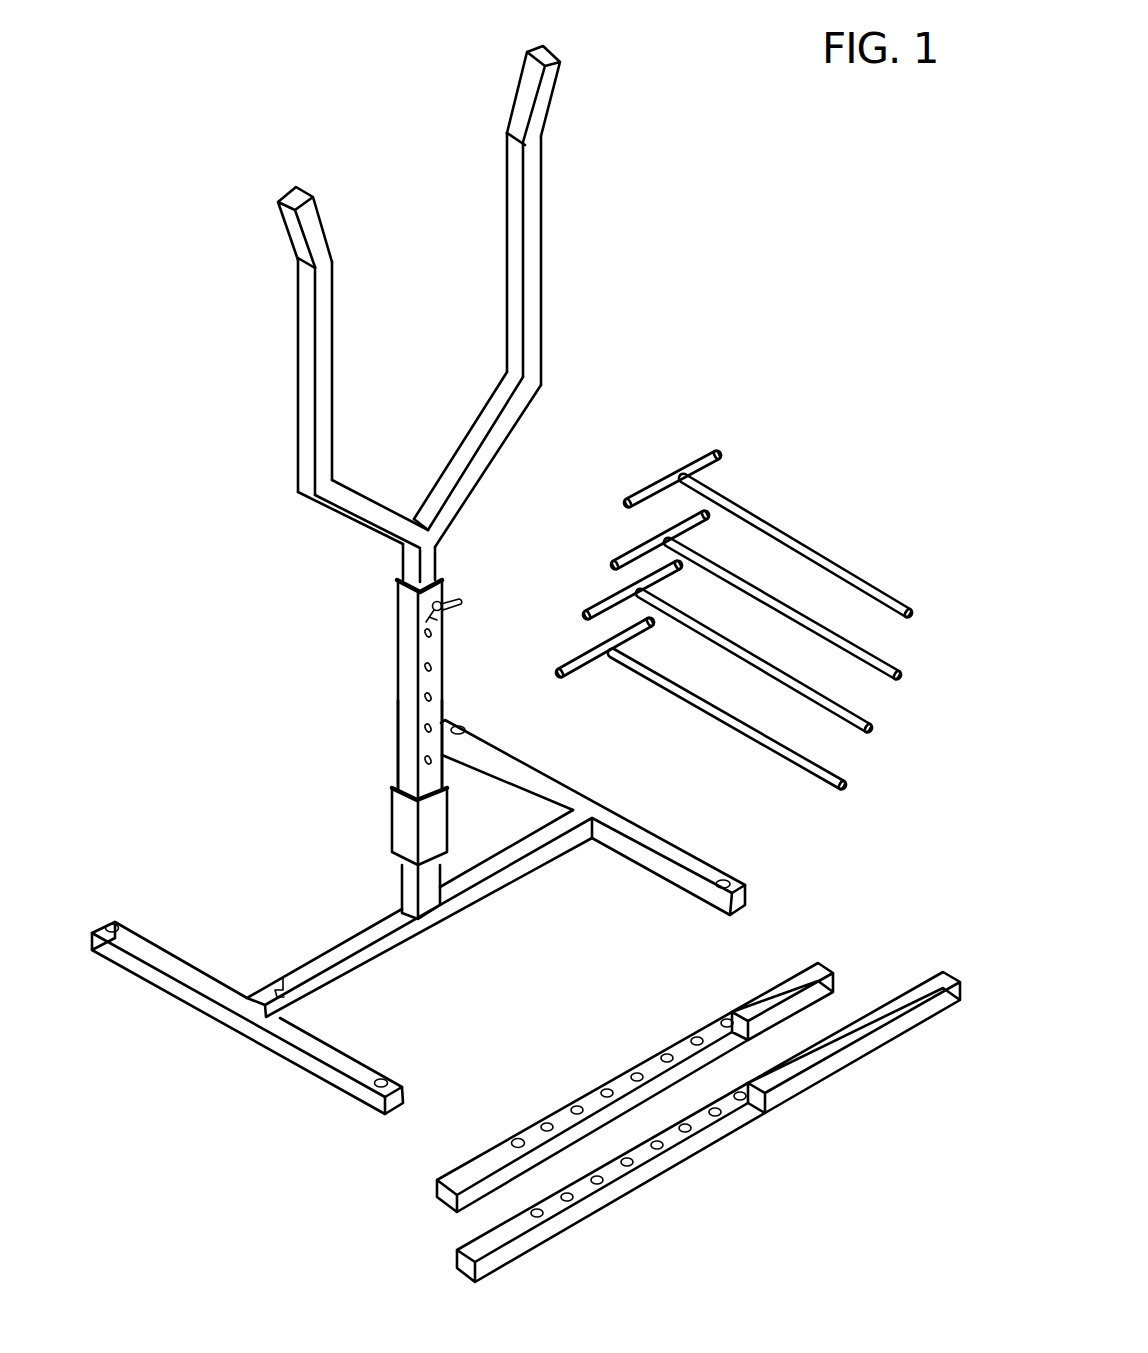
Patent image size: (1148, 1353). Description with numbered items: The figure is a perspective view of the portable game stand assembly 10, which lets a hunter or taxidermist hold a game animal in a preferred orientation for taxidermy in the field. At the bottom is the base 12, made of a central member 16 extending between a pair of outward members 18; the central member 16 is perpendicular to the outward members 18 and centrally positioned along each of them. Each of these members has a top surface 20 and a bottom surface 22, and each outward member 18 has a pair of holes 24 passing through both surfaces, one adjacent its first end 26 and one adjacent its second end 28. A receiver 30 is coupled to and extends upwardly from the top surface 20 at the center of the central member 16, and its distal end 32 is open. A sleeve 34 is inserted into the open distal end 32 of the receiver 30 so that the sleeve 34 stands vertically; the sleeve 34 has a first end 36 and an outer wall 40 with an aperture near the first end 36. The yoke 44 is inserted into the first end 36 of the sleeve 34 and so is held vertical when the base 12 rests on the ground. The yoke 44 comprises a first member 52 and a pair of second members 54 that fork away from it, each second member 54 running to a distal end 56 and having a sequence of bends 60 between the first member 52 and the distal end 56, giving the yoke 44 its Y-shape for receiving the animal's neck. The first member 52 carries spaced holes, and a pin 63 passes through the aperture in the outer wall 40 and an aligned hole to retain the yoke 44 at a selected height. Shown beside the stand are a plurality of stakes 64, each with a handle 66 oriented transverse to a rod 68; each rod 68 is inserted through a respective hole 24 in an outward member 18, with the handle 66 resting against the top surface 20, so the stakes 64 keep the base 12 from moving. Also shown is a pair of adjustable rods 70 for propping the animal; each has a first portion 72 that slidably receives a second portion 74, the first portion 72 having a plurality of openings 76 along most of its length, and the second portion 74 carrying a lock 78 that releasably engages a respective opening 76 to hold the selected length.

The portable game stand assembly 10 is at (172, 188).
The base 12 is at (151, 902).
The central member 16 is at (358, 933).
The outward members 18 is at (693, 853).
The top surface 20 is at (280, 980).
The bottom surface 22 is at (247, 1040).
The holes 24 is at (461, 718).
The first end 26 is at (92, 928).
The second end 28 is at (398, 1102).
The receiver 30 is at (393, 825).
The distal end 32 is at (407, 790).
The sleeve 34 is at (397, 608).
The first end 36 is at (408, 578).
The outer wall 40 is at (410, 697).
The yoke 44 is at (270, 449).
The first member 52 is at (438, 557).
The second members 54 is at (543, 250).
The distal end 56 is at (548, 50).
The bends 60 is at (512, 128).
The pin 63 is at (450, 602).
The stakes 64 is at (857, 530).
The handle 66 is at (698, 478).
The rod 68 is at (790, 535).
The adjustable rods 70 is at (669, 1133).
The first portion 72 is at (598, 1215).
The second portion 74 is at (858, 1060).
The openings 76 is at (625, 1068).
The lock 78 is at (516, 1138).